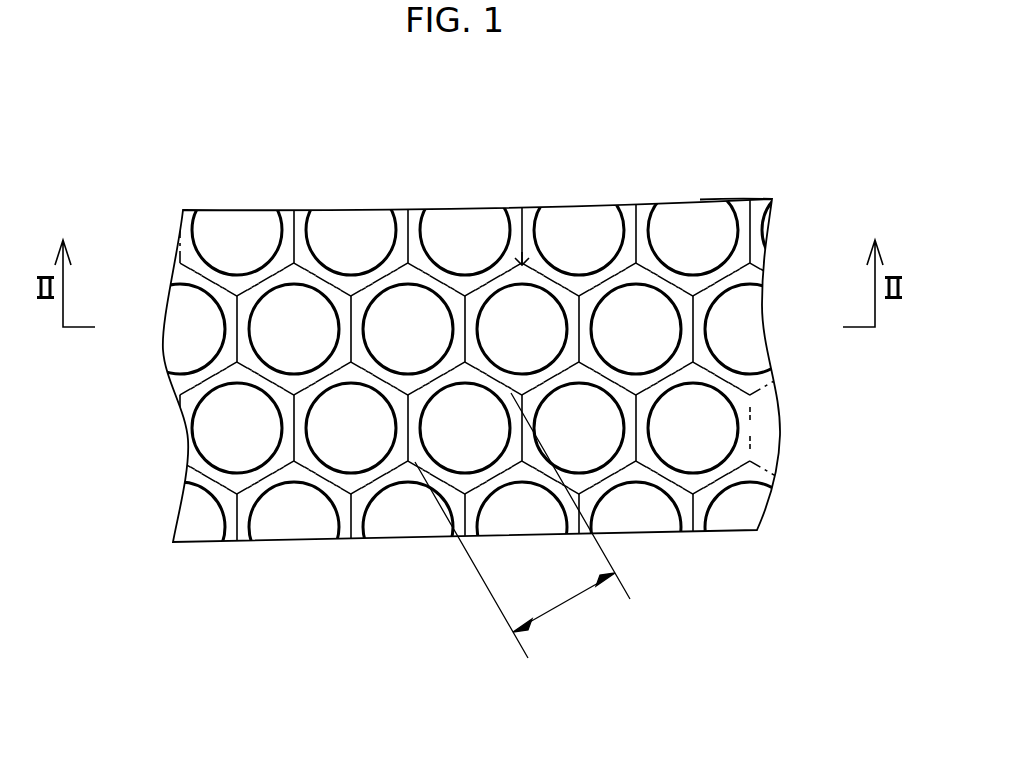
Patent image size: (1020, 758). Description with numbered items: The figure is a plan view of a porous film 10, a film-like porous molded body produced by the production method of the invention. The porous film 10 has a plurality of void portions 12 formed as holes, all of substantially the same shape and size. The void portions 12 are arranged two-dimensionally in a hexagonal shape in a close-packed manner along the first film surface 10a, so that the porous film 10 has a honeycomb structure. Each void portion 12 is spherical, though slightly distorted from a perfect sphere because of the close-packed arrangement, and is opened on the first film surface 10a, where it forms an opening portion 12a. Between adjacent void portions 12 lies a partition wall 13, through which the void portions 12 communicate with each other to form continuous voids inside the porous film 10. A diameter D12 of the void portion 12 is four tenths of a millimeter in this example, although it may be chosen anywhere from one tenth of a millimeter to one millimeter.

The porous film 10 is at (229, 562).
The first film surface 10a is at (740, 208).
The void portion 12 is at (280, 310).
The opening portion 12a is at (308, 298).
The partition wall 13 is at (574, 300).
The diameter of the void portion D12 is at (522, 525).